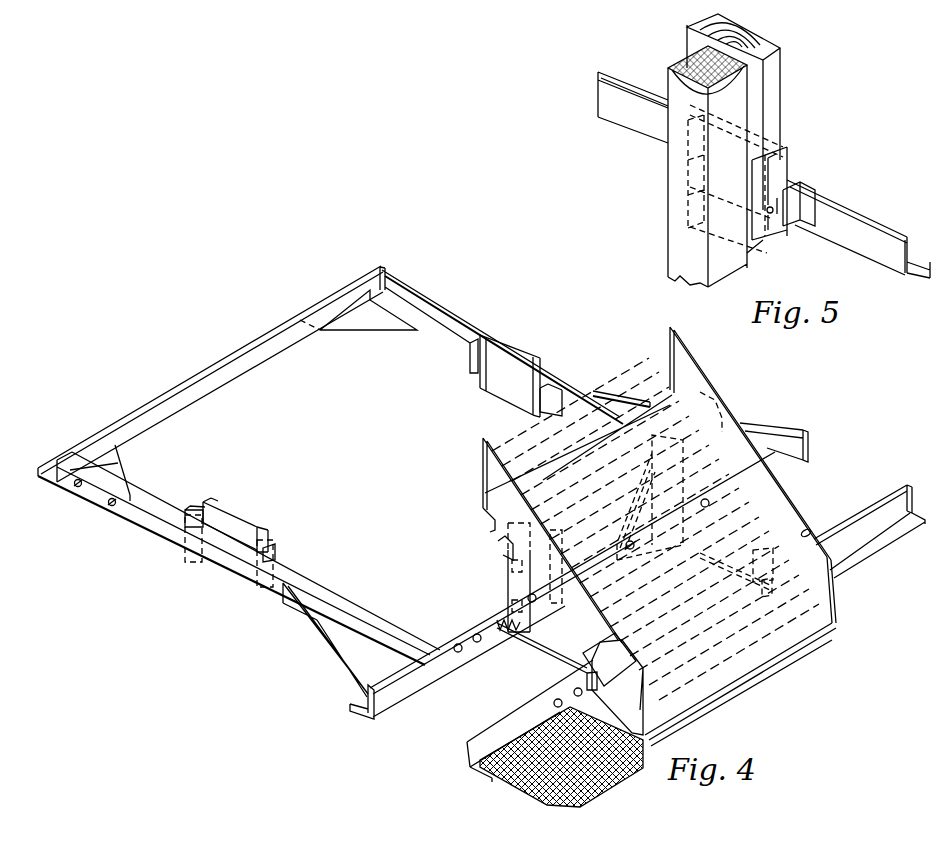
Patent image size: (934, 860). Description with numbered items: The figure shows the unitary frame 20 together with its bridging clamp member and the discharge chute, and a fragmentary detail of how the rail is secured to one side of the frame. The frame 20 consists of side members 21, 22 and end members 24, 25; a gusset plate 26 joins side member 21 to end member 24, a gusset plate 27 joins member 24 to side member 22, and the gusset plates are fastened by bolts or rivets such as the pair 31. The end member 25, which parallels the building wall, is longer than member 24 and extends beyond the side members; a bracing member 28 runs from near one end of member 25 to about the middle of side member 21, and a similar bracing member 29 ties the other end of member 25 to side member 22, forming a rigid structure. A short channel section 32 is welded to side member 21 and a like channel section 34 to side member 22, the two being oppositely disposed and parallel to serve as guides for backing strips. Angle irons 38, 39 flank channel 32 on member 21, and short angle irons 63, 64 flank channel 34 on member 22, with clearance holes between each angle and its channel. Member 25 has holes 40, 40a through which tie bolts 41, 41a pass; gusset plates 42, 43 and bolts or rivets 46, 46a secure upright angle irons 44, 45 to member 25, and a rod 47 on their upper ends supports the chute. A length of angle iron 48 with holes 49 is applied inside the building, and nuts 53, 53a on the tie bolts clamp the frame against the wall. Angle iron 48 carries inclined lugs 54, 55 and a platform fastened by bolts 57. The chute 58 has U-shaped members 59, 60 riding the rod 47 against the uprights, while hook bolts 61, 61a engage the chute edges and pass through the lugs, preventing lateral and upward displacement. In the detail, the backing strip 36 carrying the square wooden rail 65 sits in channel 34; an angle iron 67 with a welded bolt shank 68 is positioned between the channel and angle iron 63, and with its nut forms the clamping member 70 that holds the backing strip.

In FIG. 4, the unitary frame 20 is at (406, 492).
In FIG. 4, the side member 21 is at (172, 498).
In FIG. 4, the side member 22 is at (445, 345).
In FIG. 4, the end member 24 is at (210, 380).
In FIG. 4, the end member 25 is at (437, 626).
In FIG. 4, the gusset plate 26 is at (122, 462).
In FIG. 4, the gusset plate 27 is at (375, 328).
In FIG. 4, the bracing member 28 is at (328, 655).
In FIG. 4, the bracing member 29 is at (622, 408).
In FIG. 4, the bolts or rivets 31 is at (109, 501).
In FIG. 4, the channel section 32 is at (232, 517).
In FIG. 4, the channel section 34 is at (525, 345).
In FIG. 5, the channel section 34 is at (784, 150).
In FIG. 5, the backing strip 36 is at (772, 90).
In FIG. 4, the angle iron 38 is at (278, 548).
In FIG. 4, the angle iron 39 is at (190, 512).
In FIG. 4, the holes 40 is at (462, 656).
In FIG. 4, the holes 40a is at (710, 508).
In FIG. 4, the tie bolt 41 is at (556, 656).
In FIG. 4, the tie bolt 41a is at (724, 570).
In FIG. 4, the gusset plate 42 is at (556, 566).
In FIG. 4, the gusset plate 43 is at (633, 516).
In FIG. 4, the upright angle iron 44 is at (506, 590).
In FIG. 4, the upright angle iron 45 is at (652, 482).
In FIG. 4, the bolts or rivets 46 is at (538, 602).
In FIG. 4, the bolts or rivets 46a is at (633, 560).
In FIG. 4, the rod 47 is at (590, 462).
In FIG. 4, the angle iron 48 is at (880, 545).
In FIG. 4, the holes 49 is at (553, 700).
In FIG. 4, the nut 53 is at (585, 678).
In FIG. 4, the nut 53a is at (763, 594).
In FIG. 4, the lug 54 is at (586, 652).
In FIG. 4, the lug 55 is at (760, 570).
In FIG. 4, the bolts 57 is at (500, 752).
In FIG. 4, the chute 58 is at (776, 498).
In FIG. 4, the U-shaped member 59 is at (499, 550).
In FIG. 4, the U-shaped member 60 is at (728, 405).
In FIG. 4, the hook bolt 61 is at (615, 640).
In FIG. 4, the hook bolt 61a is at (810, 530).
In FIG. 4, the angle iron 63 is at (560, 412).
In FIG. 4, the angle iron 64 is at (474, 362).
In FIG. 5, the square wooden rail 65 is at (675, 220).
In FIG. 5, the angle iron 67 is at (780, 170).
In FIG. 5, the bolt shank 68 is at (783, 190).
In FIG. 5, the clamping member 70 is at (779, 212).